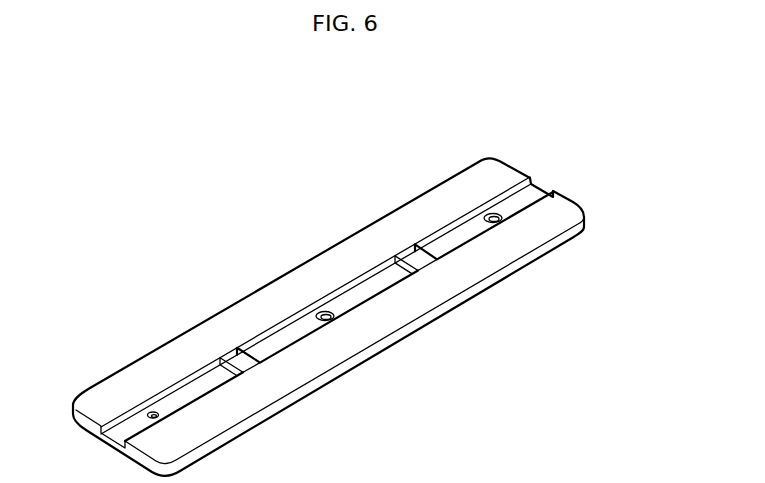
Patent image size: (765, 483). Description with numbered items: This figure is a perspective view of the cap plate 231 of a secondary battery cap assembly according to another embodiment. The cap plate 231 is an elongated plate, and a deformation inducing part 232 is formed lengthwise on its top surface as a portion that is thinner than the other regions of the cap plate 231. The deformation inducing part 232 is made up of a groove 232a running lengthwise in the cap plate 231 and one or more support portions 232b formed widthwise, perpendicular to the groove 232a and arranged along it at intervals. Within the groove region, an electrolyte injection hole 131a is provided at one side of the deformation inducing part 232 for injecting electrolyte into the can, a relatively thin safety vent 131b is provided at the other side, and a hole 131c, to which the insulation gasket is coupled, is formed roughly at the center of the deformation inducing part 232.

The cap plate 231 is at (584, 156).
The deformation inducing part 232 is at (201, 227).
The groove 232a is at (277, 321).
The support portion 232b is at (252, 338).
The electrolyte injection hole 131a is at (150, 412).
The safety vent 131b is at (492, 214).
The hole 131c is at (324, 311).